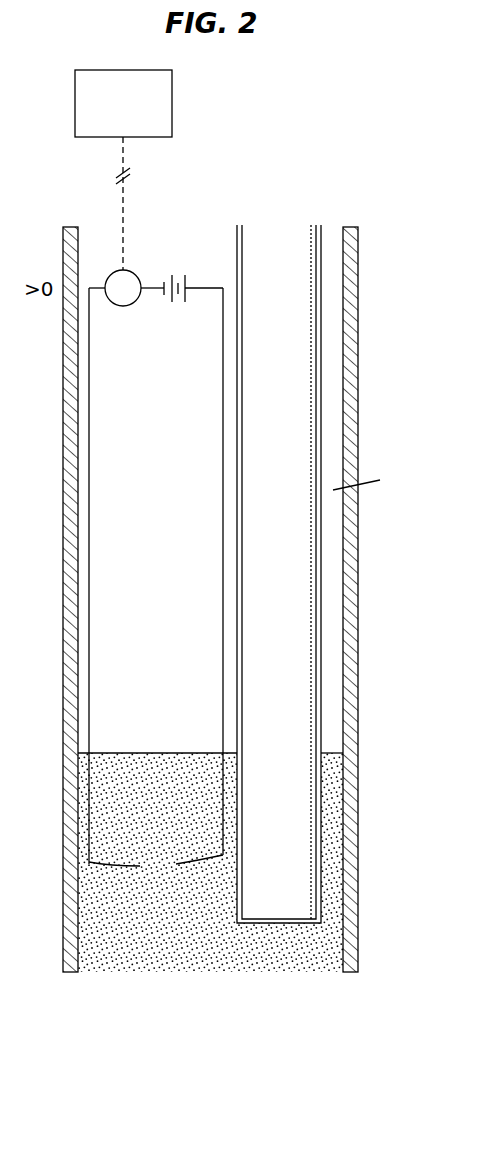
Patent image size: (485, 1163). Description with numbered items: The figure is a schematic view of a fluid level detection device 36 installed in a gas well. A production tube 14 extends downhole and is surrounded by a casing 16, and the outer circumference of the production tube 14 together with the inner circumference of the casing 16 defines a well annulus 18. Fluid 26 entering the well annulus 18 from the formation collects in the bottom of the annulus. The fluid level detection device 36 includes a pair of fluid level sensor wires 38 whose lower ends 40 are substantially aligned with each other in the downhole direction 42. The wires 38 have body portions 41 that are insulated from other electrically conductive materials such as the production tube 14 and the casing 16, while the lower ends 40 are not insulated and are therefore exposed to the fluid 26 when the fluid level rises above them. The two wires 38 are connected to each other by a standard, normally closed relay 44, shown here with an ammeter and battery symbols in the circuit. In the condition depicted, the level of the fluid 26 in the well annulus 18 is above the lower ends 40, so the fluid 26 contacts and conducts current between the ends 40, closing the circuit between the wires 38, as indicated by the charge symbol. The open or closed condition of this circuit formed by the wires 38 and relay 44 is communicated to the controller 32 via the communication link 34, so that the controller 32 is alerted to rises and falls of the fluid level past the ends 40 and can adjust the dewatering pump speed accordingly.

The production tube 14 is at (294, 581).
The casing 16 is at (358, 318).
The well annulus 18 is at (373, 483).
The fluid 26 is at (170, 802).
The controller 32 is at (139, 122).
The communication link 34 is at (126, 207).
The fluid level detection device 36 is at (268, 154).
The fluid level sensor wires 38 is at (216, 371).
The lower ends 40 is at (156, 865).
The body portions 41 is at (223, 410).
The downhole direction 42 is at (162, 622).
The relay 44 is at (156, 265).